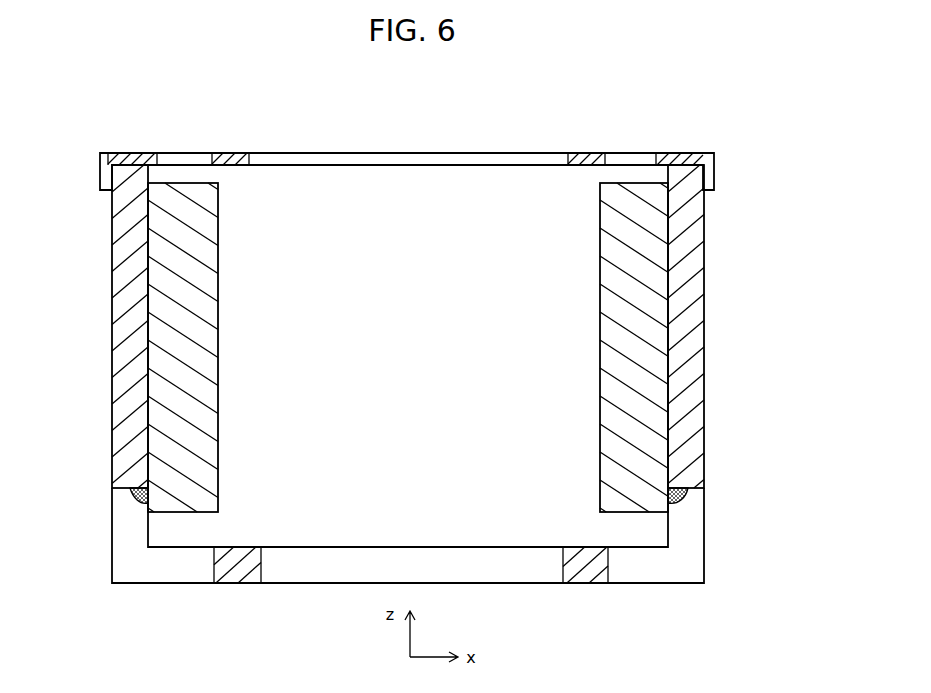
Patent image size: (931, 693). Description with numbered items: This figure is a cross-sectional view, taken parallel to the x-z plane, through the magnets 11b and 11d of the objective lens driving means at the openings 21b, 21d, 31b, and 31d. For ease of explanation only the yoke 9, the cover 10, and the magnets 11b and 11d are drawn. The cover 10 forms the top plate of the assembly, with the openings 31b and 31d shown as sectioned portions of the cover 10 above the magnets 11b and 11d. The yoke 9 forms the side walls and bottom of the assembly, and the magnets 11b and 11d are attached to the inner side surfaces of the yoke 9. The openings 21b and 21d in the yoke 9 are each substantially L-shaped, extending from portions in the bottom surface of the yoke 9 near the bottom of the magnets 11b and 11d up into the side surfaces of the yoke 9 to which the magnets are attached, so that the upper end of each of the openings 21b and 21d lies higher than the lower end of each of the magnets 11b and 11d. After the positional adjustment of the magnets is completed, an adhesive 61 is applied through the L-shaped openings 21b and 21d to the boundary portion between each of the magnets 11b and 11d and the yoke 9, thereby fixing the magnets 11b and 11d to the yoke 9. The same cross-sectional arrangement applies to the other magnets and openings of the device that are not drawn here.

The yoke 9 is at (687, 317).
The cover 10 is at (478, 152).
The magnet 11b is at (192, 308).
The magnet 11d is at (622, 300).
The opening 21b is at (170, 567).
The opening 21d is at (662, 573).
The opening 31b is at (190, 160).
The opening 31d is at (622, 161).
The adhesive 61 is at (140, 503).